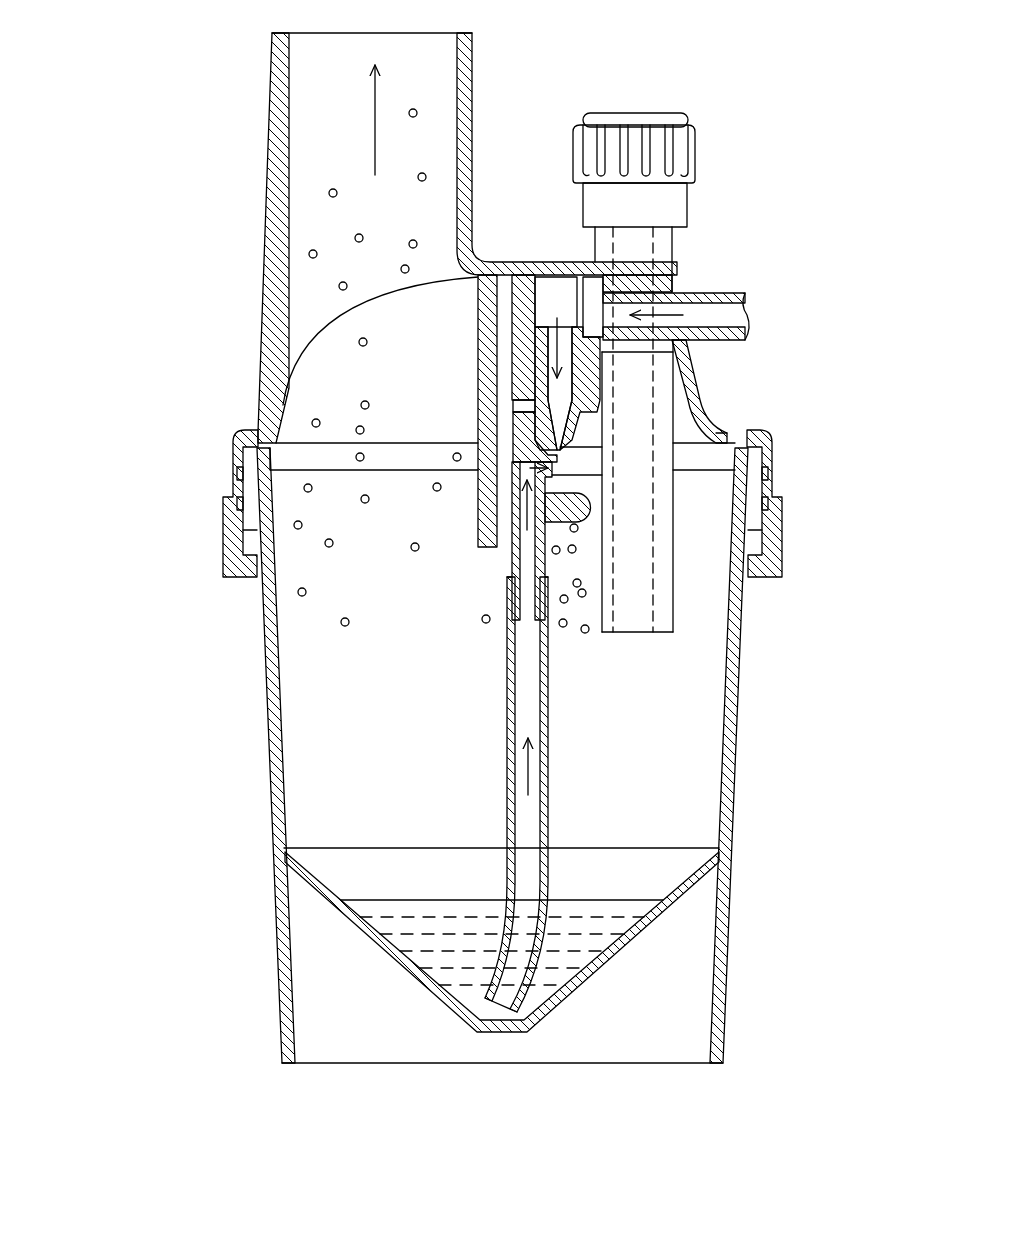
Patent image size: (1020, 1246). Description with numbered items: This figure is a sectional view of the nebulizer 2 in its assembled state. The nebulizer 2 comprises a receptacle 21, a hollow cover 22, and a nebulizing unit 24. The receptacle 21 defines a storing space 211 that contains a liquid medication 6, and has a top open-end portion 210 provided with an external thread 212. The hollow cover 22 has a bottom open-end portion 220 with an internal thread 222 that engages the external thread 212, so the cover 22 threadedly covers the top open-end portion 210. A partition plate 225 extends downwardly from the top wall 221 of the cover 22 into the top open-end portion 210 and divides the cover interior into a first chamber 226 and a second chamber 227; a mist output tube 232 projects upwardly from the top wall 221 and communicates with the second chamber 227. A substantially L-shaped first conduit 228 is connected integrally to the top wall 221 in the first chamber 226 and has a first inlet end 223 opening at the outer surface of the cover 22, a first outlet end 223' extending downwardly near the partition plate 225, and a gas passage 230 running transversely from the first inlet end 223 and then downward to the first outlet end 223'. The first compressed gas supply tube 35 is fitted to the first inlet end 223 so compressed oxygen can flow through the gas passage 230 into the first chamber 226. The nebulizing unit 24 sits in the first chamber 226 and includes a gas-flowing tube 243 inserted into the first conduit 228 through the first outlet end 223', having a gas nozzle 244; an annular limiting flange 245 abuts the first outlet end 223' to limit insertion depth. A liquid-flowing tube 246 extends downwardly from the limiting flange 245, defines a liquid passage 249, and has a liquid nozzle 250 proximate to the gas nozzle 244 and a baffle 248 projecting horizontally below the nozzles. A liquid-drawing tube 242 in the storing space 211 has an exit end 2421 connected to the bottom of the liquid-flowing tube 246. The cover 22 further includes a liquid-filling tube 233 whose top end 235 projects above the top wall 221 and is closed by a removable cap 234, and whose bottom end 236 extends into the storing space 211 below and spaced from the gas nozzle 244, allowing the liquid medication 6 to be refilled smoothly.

The nebulizer 2 is at (178, 78).
The mist output tube 232 is at (468, 100).
The second chamber 227 is at (335, 392).
The cap 234 is at (655, 122).
The liquid-filling tube 233 is at (662, 243).
The first inlet end 223 is at (724, 299).
The first compressed gas supply tube 35 is at (748, 334).
The top wall 221 is at (528, 277).
The gas passage 230 is at (590, 318).
The gas-flowing tube 243 is at (543, 345).
The first outlet end 223' is at (492, 388).
The annular limiting flange 245 is at (523, 413).
The liquid-flowing tube 246 is at (520, 445).
The partition plate 225 is at (487, 525).
The first chamber 226 is at (592, 456).
The liquid nozzle 250 is at (552, 465).
The gas nozzle 244 is at (585, 445).
The first conduit 228 is at (622, 360).
The top end 235 is at (655, 403).
The bottom end 236 is at (637, 640).
The baffle 248 is at (590, 508).
The nebulizing unit 24 is at (512, 567).
The exit end 2421 is at (512, 610).
The liquid passage 249 is at (525, 587).
The liquid-drawing tube 242 is at (508, 680).
The hollow cover 22 is at (218, 455).
The bottom open-end portion 220 is at (228, 540).
The internal thread 222 is at (245, 495).
The external thread 212 is at (250, 527).
The top open-end portion 210 is at (265, 468).
The receptacle 21 is at (260, 800).
The storing space 211 is at (385, 815).
The liquid medication 6 is at (585, 942).